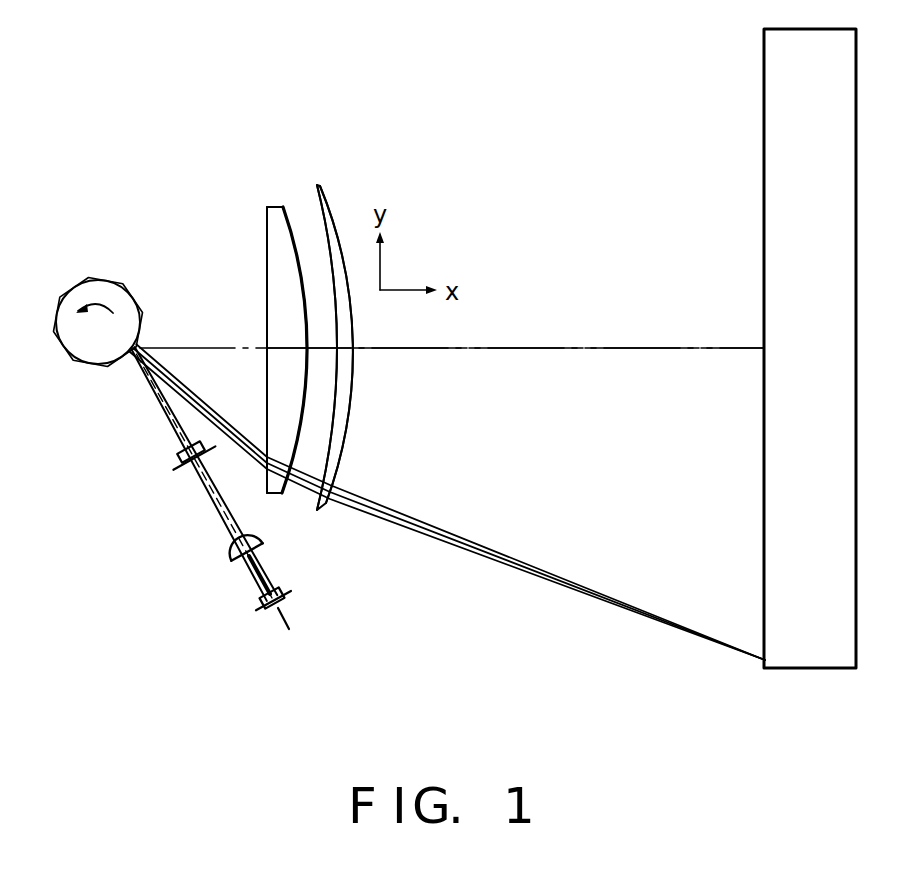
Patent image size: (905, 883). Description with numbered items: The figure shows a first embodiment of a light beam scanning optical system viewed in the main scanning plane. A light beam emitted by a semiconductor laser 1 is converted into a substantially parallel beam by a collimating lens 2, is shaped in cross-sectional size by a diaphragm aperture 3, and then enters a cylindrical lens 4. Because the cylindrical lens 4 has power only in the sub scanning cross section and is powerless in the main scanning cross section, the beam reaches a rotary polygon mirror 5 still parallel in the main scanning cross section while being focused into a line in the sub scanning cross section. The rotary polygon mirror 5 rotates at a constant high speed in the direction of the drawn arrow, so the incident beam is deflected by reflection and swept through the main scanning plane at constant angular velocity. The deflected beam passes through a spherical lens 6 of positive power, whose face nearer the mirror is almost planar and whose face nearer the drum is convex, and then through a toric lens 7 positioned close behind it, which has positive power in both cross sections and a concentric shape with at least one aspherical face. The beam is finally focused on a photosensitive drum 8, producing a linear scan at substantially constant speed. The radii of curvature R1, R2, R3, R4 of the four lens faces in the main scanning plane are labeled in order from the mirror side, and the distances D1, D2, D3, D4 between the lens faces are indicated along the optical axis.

The semiconductor laser 1 is at (262, 613).
The collimating lens 2 is at (228, 562).
The diaphragm aperture 3 is at (230, 542).
The cylindrical lens 4 is at (180, 457).
The rotary polygon mirror 5 is at (93, 348).
The spherical lens 6 is at (246, 316).
The toric lens 7 is at (363, 307).
The photosensitive drum 8 is at (772, 110).
The radius of curvature of first lens face R1 is at (266, 263).
The radius of curvature of second lens face R2 is at (296, 210).
The radius of curvature of third lens face R3 is at (312, 200).
The radius of curvature of fourth lens face R4 is at (355, 317).
The distance between lens faces D1 is at (280, 350).
The distance between lens faces D2 is at (328, 353).
The distance between lens faces D3 is at (347, 353).
The distance between lens faces D4 is at (537, 350).